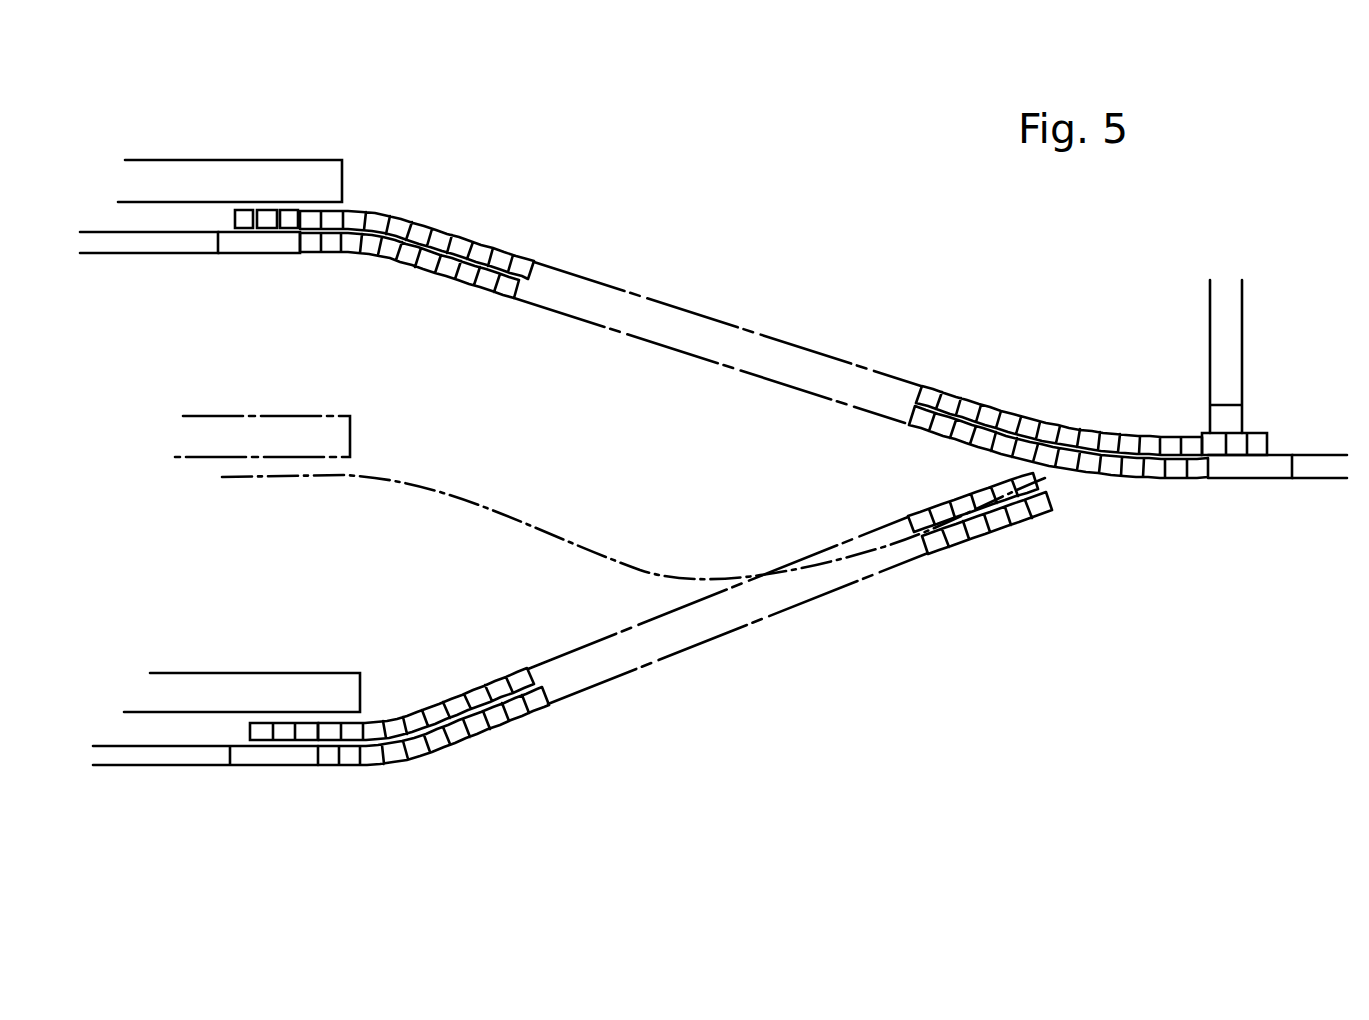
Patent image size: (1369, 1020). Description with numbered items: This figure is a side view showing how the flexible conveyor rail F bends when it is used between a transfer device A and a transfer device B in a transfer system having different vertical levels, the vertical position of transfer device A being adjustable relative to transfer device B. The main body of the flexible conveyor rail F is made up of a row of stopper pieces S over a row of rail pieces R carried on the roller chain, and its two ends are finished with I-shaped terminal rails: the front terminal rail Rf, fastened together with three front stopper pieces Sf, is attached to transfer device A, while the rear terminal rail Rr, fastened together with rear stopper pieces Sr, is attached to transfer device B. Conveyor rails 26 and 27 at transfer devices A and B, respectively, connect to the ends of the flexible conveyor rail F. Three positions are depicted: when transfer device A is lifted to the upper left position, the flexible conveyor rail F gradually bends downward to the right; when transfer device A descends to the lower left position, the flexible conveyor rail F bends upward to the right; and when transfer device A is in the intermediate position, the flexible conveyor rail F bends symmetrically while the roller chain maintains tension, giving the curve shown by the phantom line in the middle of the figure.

The transfer device A is at (182, 180).
The transfer device B is at (1270, 427).
The stopper piece S is at (422, 230).
The rail piece R is at (452, 268).
The front stopper piece Sf is at (288, 222).
The front terminal rail Rf is at (270, 242).
The rear stopper piece Sr is at (1237, 452).
The rear terminal rail Rr is at (1228, 472).
The flexible conveyor rail F is at (515, 260).
The conveyor rail 26 is at (178, 240).
The conveyor rail 27 is at (1313, 470).